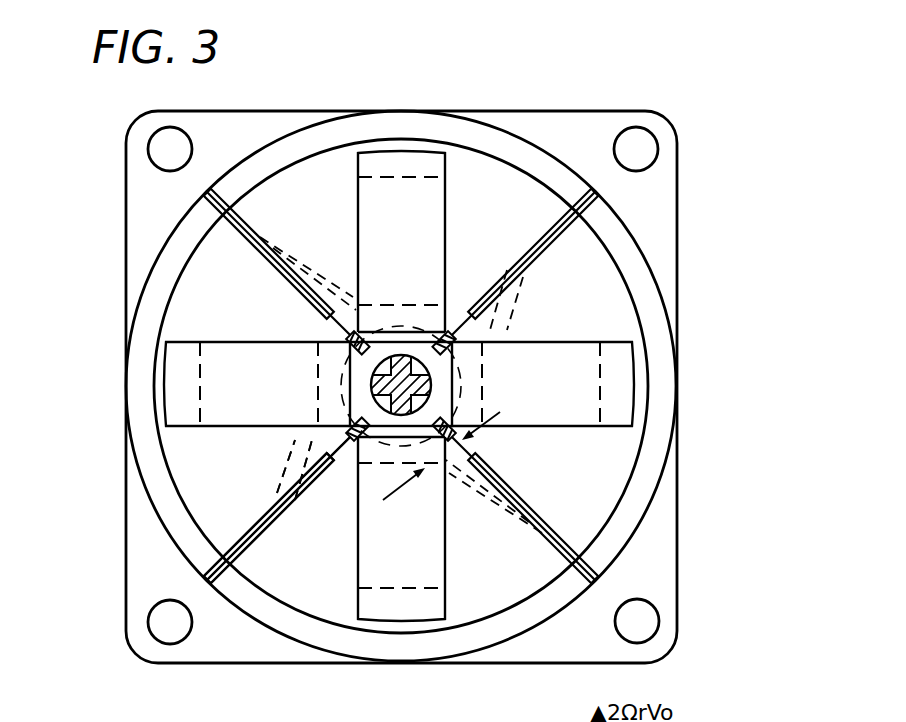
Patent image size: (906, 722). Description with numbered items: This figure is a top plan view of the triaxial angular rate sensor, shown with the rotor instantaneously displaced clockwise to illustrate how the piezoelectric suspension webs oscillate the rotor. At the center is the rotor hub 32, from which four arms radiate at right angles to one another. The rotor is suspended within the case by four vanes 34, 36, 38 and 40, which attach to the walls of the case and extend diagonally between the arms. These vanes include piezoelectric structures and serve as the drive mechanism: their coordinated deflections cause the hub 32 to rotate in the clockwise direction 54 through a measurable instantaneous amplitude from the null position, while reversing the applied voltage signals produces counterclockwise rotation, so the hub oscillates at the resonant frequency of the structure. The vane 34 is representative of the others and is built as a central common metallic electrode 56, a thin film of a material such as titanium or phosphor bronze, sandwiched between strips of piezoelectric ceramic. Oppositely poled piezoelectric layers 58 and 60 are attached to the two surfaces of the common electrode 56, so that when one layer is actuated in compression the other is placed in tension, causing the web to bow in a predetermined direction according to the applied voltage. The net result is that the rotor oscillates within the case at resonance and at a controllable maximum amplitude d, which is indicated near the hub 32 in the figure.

The central hub 32 is at (453, 402).
The vane 34 is at (268, 530).
The vane 36 is at (566, 540).
The vane 38 is at (513, 265).
The vane 40 is at (288, 280).
The clockwise direction 54 is at (450, 88).
The central common metallic electrode 56 is at (342, 440).
The piezoelectric layer 58 is at (300, 467).
The piezoelectric layer 60 is at (297, 503).
The maximum amplitude d is at (470, 441).